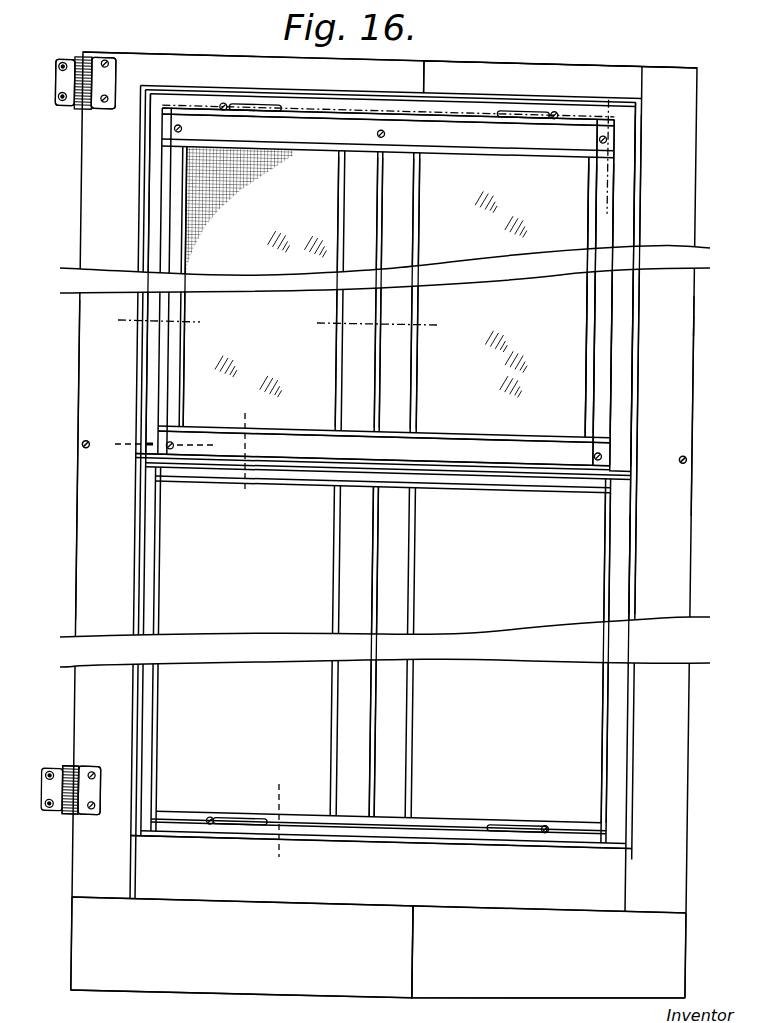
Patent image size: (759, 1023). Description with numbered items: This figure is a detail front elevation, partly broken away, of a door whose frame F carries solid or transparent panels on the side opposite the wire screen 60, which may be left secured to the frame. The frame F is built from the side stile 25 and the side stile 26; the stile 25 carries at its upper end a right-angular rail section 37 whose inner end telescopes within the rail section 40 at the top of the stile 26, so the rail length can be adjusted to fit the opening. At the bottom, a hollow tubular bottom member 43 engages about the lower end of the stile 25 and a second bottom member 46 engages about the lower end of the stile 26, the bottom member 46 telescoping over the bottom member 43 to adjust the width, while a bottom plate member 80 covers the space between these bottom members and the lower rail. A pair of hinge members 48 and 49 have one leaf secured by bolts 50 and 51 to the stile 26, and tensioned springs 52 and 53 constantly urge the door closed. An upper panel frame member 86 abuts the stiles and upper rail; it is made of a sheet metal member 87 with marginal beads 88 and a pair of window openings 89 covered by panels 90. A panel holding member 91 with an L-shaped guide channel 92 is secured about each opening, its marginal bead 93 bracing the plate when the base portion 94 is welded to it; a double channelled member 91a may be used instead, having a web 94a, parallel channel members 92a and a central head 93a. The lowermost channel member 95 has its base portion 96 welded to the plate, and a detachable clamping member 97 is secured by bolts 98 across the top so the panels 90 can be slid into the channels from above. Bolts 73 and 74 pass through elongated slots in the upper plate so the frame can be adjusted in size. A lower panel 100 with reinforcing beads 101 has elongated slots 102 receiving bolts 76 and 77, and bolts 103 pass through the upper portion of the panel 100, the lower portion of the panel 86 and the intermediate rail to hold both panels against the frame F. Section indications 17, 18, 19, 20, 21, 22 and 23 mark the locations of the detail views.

The section line 17 is at (212, 107).
The section line 18 is at (118, 319).
The section line 19 is at (317, 322).
The section line 20 is at (115, 443).
The section line 21 is at (610, 90).
The section line 22 is at (281, 783).
The section line 23 is at (247, 412).
The stile 25 is at (671, 398).
The stile 26 is at (93, 356).
The rail section 37 is at (534, 68).
The rail section 40 is at (238, 60).
The bottom member 43 is at (512, 987).
The bottom member 46 is at (313, 987).
The hinge member 48 is at (74, 56).
The hinge member 49 is at (45, 786).
The bolts 50 is at (112, 57).
The bolts 51 is at (88, 813).
The tensioned spring 52 is at (70, 107).
The tensioned spring 53 is at (73, 766).
The wire screen 60 is at (236, 197).
The bolt 73 is at (226, 101).
The bolt 74 is at (554, 112).
The bolt 76 is at (228, 796).
The bolt 77 is at (545, 822).
The bottom plate member 80 is at (606, 882).
The upper panel frame member 86 is at (627, 366).
The sheet metal member 87 is at (628, 330).
The marginal beads 88 is at (148, 214).
The window openings 89 is at (184, 240).
The panels 90 is at (372, 294).
The panel holding member 91 is at (603, 392).
The double channelled member 91a is at (396, 365).
The L-shaped guide channel 92 is at (587, 388).
The channel members 92a is at (339, 377).
The marginal bead 93 is at (611, 318).
The central head 93a is at (416, 343).
The base portion 94 is at (597, 296).
The web 94a is at (401, 414).
The lowermost channel member 95 is at (511, 420).
The base portion 96 is at (534, 457).
The detachable clamping member 97 is at (312, 128).
The bolts 98 is at (380, 124).
The lower panel 100 is at (623, 592).
The beads 101 is at (382, 711).
The elongated slots 102 is at (241, 817).
The bolts 103 is at (172, 450).
The frame F is at (698, 304).